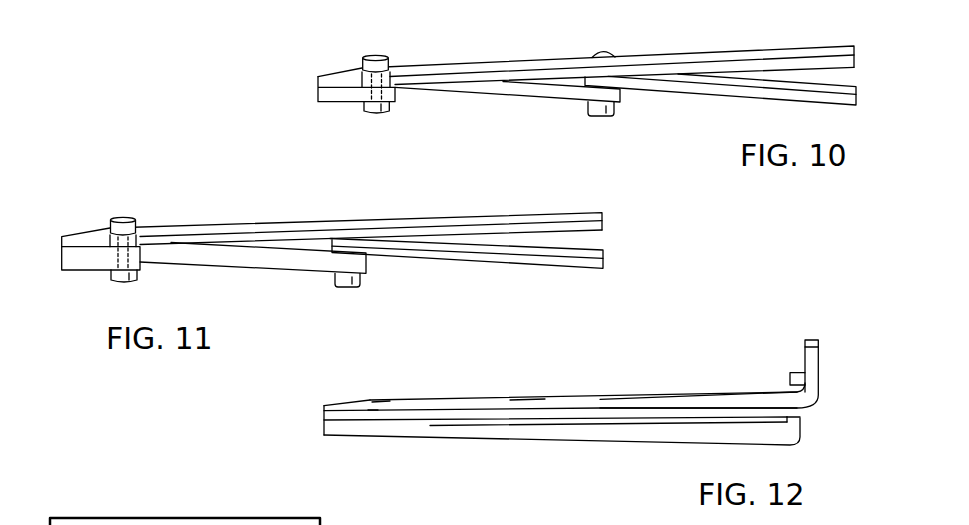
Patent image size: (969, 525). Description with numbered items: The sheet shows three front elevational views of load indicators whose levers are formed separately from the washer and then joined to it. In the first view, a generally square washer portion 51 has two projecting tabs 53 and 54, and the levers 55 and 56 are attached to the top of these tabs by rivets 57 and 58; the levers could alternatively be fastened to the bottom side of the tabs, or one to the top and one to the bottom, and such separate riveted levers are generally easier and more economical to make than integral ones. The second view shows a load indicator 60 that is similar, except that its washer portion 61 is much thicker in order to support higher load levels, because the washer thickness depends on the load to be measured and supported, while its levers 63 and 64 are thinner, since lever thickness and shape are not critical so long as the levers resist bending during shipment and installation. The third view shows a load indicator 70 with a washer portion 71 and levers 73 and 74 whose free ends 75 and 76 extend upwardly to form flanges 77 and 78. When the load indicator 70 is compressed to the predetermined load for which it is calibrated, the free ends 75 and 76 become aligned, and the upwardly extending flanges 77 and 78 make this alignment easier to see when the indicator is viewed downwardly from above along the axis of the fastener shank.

In FIG. 10, the washer portion 51 is at (490, 88).
In FIG. 10, the projecting tab 53 is at (621, 96).
In FIG. 10, the projecting tab 54 is at (317, 92).
In FIG. 10, the lever 55 is at (750, 96).
In FIG. 10, the lever 56 is at (704, 53).
In FIG. 10, the rivet 57 is at (600, 116).
In FIG. 11, the rivet 57 is at (352, 281).
In FIG. 10, the rivet 58 is at (383, 56).
In FIG. 11, the rivet 58 is at (123, 219).
In FIG. 11, the load indicator 60 is at (175, 216).
In FIG. 11, the washer portion 61 is at (258, 262).
In FIG. 11, the lever 63 is at (497, 262).
In FIG. 11, the lever 64 is at (461, 229).
In FIG. 12, the load indicator 70 is at (402, 390).
In FIG. 12, the washer portion 71 is at (504, 399).
In FIG. 12, the lever 73 is at (662, 432).
In FIG. 12, the lever 74 is at (632, 400).
In FIG. 12, the free end 75 is at (791, 375).
In FIG. 12, the free end 76 is at (817, 340).
In FIG. 12, the flange 77 is at (802, 419).
In FIG. 12, the flange 78 is at (819, 374).